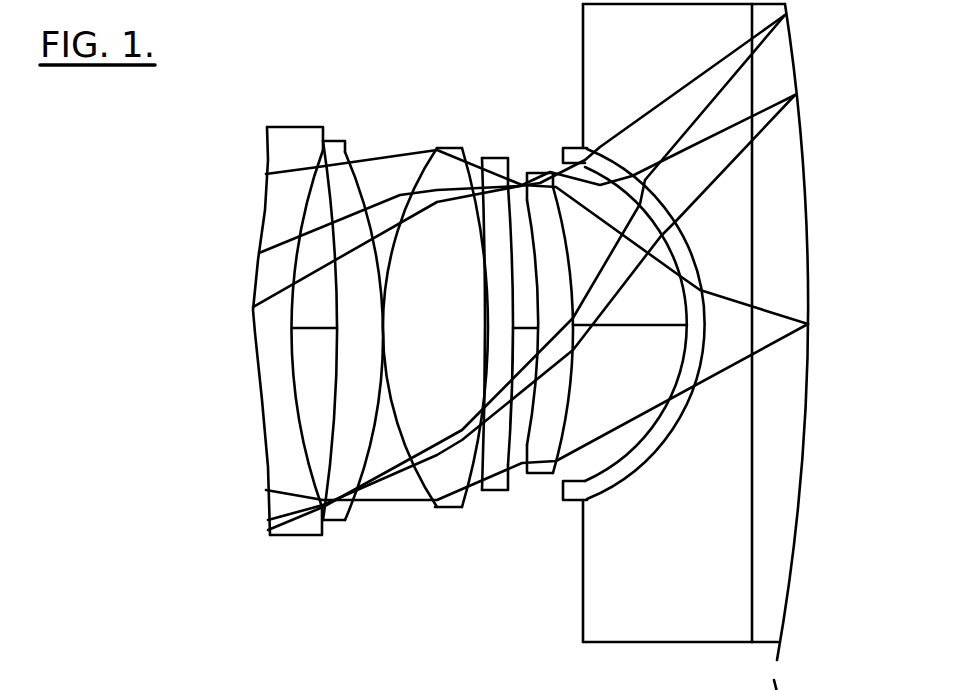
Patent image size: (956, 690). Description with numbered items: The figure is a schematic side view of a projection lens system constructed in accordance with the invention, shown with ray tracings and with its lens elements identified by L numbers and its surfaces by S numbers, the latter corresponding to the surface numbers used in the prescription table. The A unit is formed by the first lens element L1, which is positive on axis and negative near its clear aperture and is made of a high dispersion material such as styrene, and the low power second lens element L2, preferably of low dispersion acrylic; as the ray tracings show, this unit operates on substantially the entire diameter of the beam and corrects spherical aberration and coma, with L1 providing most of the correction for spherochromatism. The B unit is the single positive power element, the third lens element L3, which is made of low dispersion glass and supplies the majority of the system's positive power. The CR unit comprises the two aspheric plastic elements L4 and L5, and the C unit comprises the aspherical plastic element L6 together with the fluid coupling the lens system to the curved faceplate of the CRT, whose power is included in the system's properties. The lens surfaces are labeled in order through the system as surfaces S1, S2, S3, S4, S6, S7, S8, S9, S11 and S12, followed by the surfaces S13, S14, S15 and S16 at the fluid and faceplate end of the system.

The first lens element L1 is at (285, 140).
The second lens element L2 is at (340, 150).
The third lens element L3 is at (443, 170).
The aspheric lens element L4 is at (497, 160).
The aspheric lens element L5 is at (537, 173).
The aspherical lens element L6 is at (575, 148).
The surface 1 S1 is at (257, 381).
The surface 2 S2 is at (292, 410).
The surface 3 S3 is at (326, 435).
The surface 4 S4 is at (372, 460).
The surface 6 S6 is at (387, 462).
The surface 7 S7 is at (435, 495).
The surface 8 S8 is at (468, 497).
The surface 9 S9 is at (517, 487).
The surface 11 S11 is at (544, 448).
The surface 12 S12 is at (556, 403).
The surface 13 S13 is at (610, 470).
The surface 14 S14 is at (632, 478).
The surface 15 S15 is at (752, 604).
The surface 16 S16 is at (783, 590).